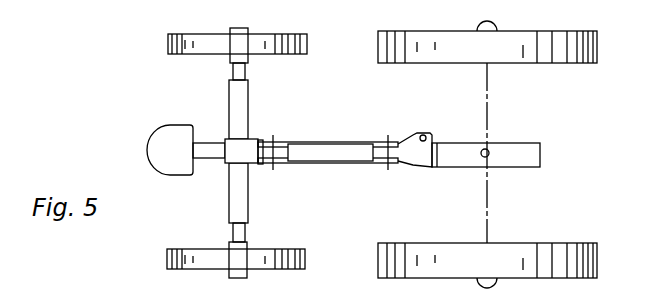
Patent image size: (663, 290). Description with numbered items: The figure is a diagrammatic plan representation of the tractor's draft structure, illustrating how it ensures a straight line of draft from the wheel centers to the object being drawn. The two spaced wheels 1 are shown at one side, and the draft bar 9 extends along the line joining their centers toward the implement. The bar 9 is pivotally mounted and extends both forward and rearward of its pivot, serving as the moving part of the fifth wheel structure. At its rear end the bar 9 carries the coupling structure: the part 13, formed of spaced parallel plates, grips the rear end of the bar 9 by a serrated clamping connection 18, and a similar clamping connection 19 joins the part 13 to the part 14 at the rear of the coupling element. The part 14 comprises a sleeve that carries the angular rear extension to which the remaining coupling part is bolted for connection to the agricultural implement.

The wheels 1 is at (517, 40).
The bar 9 is at (503, 150).
The coupling part 13 is at (320, 152).
The coupling part 14 is at (245, 148).
The serrated clamping connection 18 is at (377, 160).
The clamping connection 19 is at (288, 164).